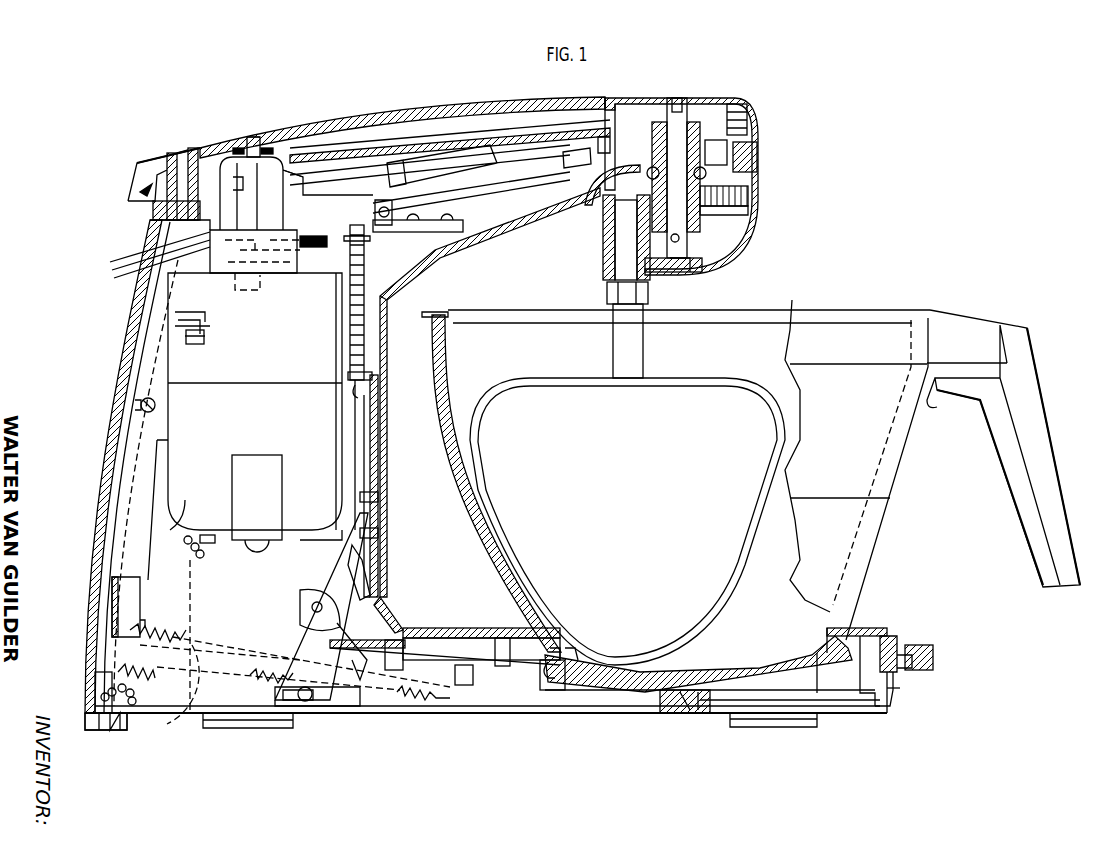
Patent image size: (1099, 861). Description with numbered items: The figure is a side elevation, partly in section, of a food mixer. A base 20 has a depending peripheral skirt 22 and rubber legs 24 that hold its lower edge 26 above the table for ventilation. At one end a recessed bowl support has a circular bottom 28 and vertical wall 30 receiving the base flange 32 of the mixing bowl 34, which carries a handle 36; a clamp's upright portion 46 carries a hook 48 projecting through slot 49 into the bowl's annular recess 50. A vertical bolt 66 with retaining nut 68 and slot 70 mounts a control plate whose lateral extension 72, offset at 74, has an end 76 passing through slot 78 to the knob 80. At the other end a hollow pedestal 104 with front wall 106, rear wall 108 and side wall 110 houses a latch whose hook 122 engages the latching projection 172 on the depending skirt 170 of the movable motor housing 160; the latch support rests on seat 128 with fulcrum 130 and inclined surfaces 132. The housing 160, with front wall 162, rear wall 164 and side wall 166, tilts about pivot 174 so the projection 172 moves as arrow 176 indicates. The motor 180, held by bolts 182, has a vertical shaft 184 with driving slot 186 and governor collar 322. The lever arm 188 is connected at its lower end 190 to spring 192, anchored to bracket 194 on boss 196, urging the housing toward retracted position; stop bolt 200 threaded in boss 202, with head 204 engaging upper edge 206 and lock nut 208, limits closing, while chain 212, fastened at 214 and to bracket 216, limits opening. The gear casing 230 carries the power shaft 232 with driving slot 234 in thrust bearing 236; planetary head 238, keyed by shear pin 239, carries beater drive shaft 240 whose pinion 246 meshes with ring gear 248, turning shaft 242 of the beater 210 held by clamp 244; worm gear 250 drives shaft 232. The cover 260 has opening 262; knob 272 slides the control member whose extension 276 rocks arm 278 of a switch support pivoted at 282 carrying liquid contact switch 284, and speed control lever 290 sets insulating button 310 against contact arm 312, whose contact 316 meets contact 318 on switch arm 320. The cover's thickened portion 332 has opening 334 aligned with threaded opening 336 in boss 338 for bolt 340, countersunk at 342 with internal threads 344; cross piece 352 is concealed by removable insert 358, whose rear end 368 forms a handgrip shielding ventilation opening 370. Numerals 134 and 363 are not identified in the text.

The base 20 is at (835, 655).
The depending peripheral skirt 22 is at (885, 632).
The supporting legs 24 is at (792, 715).
The lower edge 26 is at (852, 712).
The bottom surface of bowl support 28 is at (778, 715).
The vertical wall portion 30 is at (828, 638).
The base flange 32 is at (562, 700).
The mixing bowl 34 is at (462, 505).
The carrying handle 36 is at (1032, 398).
The upwardly extending portion 46 is at (540, 692).
The clamping hook 48 is at (565, 655).
The slot 49 is at (546, 668).
The annular recess 50 is at (572, 664).
The vertical bolt 66 is at (700, 712).
The retaining nut 68 is at (662, 712).
The slot 70 is at (680, 712).
The lateral extension 72 is at (826, 702).
The upwardly offset portion 74 is at (895, 692).
The projecting end 76 is at (900, 668).
The slot 78 is at (906, 652).
The control knob 80 is at (933, 652).
The pedestal 104 is at (104, 458).
The front wall 106 is at (380, 432).
The rear wall 108 is at (108, 495).
The side wall 110 is at (118, 517).
The retaining hook 122 is at (342, 540).
The supporting seat 128 is at (420, 640).
The fulcrum 130 is at (425, 640).
The inclined surfaces 132 is at (470, 630).
The lever arm 134 is at (372, 697).
The motor housing 160 is at (175, 320).
The front wall 162 is at (389, 312).
The rear wall 164 is at (185, 333).
The side wall 166 is at (186, 337).
The depending skirt 170 is at (380, 468).
The latching projection 172 is at (372, 566).
The pivot 174 is at (142, 404).
The arrow 176 is at (425, 490).
The motor 180 is at (185, 525).
The bolts 182 is at (200, 328).
The motor shaft 184 is at (262, 132).
The driving slot 186 is at (252, 137).
The lever arm 188 is at (185, 553).
The lower end 190 is at (143, 634).
The spring 192 is at (180, 634).
The bracket 194 is at (455, 700).
The depending boss 196 is at (470, 690).
The stop member 200 is at (372, 360).
The boss 202 is at (368, 336).
The lower head 204 is at (375, 373).
The upper edge 206 is at (376, 391).
The lock nut 208 is at (395, 252).
The beater 210 is at (625, 660).
The stop chain 212 is at (132, 693).
The chain fastening 214 is at (128, 714).
The bracket 216 is at (205, 558).
The gear casing 230 is at (505, 238).
The power shaft 232 is at (700, 110).
The driving connection 234 is at (690, 100).
The thrust bearing 236 is at (760, 182).
The planetary head 238 is at (700, 250).
The shear pin 239 is at (700, 232).
The beater drive shaft 240 is at (608, 238).
The beater shaft 242 is at (622, 262).
The clamping means 244 is at (612, 293).
The pinion 246 is at (598, 215).
The internal ring gear 248 is at (745, 248).
The worm gear 250 is at (760, 142).
The cover 260 is at (612, 97).
The opening 262 is at (668, 100).
The manual knob 272 is at (321, 112).
The on-off lever extension 276 is at (345, 118).
The actuating arm 278 is at (380, 125).
The pivot axis 282 is at (428, 192).
The liquid contact switch 284 is at (420, 118).
The speed control lever 290 is at (510, 162).
The insulating button 310 is at (283, 207).
The spring contact arm 312 is at (190, 230).
The contact 316 is at (190, 232).
The contact 318 is at (190, 240).
The movable switch arm 320 is at (300, 241).
The collar 322 is at (282, 295).
The thickened portion 332 is at (762, 123).
The opening 334 is at (760, 168).
The threaded attaching opening 336 is at (755, 225).
The attachment boss 338 is at (762, 195).
The attaching bolt 340 is at (760, 157).
The countersunk portion 342 is at (760, 110).
The internal threads 344 is at (745, 106).
The cross piece 352 is at (160, 212).
The removable insert 358 is at (505, 100).
The wall 363 is at (192, 175).
The projecting portion 368 is at (135, 165).
The ventilation opening 370 is at (140, 194).